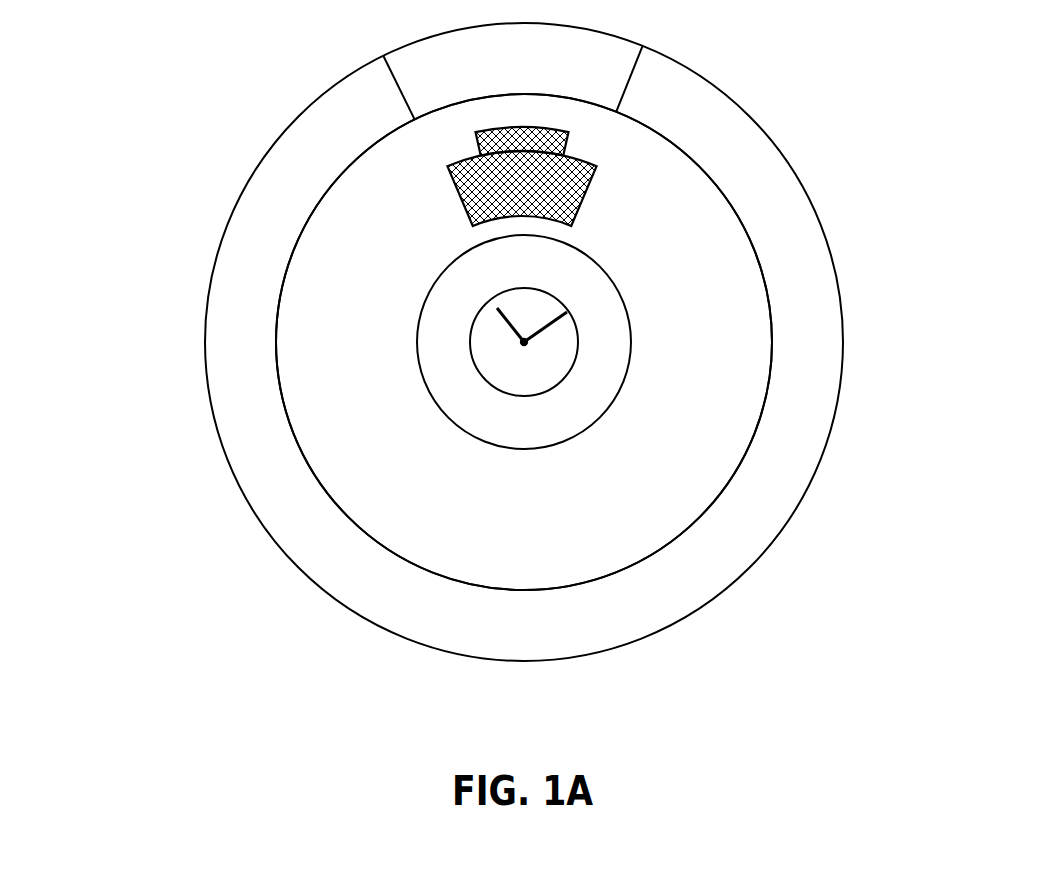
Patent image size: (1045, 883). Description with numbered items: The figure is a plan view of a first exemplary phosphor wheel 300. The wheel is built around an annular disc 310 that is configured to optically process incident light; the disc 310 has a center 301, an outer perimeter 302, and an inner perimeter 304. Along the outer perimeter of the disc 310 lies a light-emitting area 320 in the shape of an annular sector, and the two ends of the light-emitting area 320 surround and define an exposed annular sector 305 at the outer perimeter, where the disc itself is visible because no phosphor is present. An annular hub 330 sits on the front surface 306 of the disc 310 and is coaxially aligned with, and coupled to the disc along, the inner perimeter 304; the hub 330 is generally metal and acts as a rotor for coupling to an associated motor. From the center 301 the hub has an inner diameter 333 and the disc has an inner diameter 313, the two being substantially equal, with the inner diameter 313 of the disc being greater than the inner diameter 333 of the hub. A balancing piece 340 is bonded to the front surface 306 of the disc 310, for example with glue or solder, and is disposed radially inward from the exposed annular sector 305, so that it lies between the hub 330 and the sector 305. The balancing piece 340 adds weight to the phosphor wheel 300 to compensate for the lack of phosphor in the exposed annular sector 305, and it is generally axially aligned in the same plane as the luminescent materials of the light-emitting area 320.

The phosphor wheel 300 is at (99, 52).
The center 301 is at (524, 342).
The outer perimeter 302 is at (807, 487).
The inner perimeter 304 is at (572, 367).
The exposed annular sector 305 is at (555, 82).
The front surface 306 is at (527, 527).
The annular disc 310 is at (620, 490).
The inner diameter of the disc 313 is at (497, 308).
The light-emitting area 320 is at (263, 232).
The hub 330 is at (448, 328).
The inner diameter of the hub 333 is at (563, 305).
The balancing piece 340 is at (580, 192).